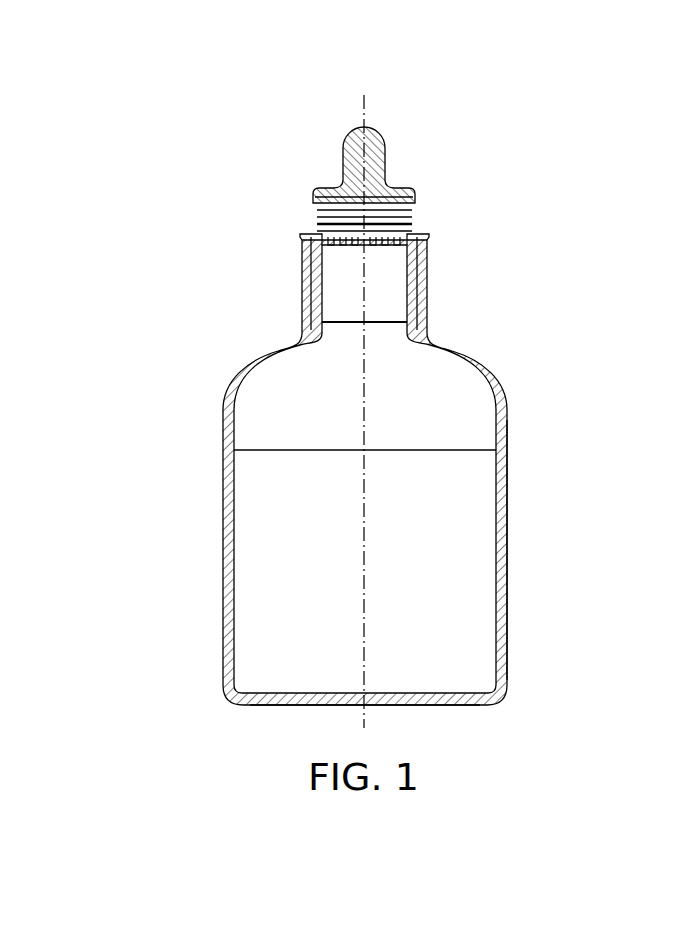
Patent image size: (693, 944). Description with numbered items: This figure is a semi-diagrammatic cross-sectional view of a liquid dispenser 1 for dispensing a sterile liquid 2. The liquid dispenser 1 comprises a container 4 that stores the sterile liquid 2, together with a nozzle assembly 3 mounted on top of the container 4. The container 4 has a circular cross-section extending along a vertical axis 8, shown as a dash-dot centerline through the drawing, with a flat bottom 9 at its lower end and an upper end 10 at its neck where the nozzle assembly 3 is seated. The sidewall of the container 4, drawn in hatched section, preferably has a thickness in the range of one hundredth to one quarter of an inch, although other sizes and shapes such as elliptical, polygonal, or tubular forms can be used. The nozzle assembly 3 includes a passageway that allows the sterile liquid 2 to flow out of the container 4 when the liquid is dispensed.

The liquid dispenser 1 is at (223, 563).
The sterile liquid 2 is at (402, 449).
The nozzle assembly 3 is at (386, 153).
The container 4 is at (507, 571).
The vertical axis 8 is at (361, 98).
The flat bottom 9 is at (452, 706).
The upper end 10 is at (427, 268).